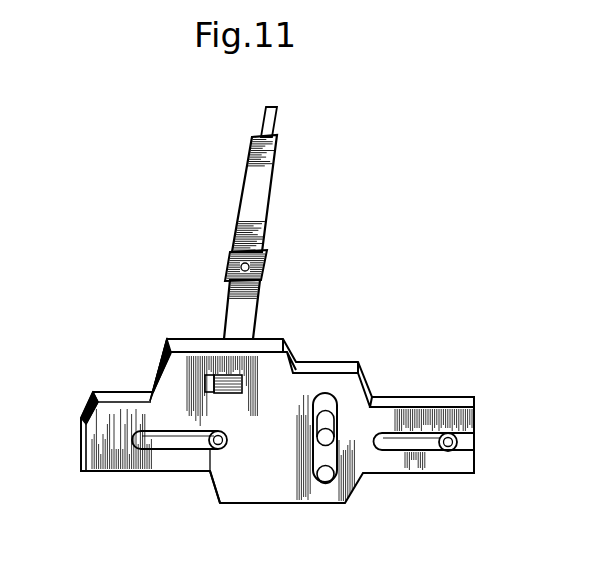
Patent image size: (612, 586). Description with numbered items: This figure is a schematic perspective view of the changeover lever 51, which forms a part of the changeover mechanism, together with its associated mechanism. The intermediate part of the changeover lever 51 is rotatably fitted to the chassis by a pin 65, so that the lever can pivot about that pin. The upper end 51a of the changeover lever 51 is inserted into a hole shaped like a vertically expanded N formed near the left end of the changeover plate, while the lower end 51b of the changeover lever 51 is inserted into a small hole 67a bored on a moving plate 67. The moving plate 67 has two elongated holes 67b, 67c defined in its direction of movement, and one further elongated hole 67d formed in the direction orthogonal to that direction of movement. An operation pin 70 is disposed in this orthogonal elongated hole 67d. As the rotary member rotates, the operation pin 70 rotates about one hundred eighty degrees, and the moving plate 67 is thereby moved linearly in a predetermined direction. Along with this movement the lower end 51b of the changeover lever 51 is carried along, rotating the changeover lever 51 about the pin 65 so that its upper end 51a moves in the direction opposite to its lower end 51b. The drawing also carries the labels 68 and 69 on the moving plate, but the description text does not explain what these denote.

The changeover lever 51 is at (270, 203).
The upper end of the changeover lever 51a is at (276, 117).
The lower end of the changeover lever 51b is at (242, 393).
The pin 65 is at (262, 276).
The moving plate 67 is at (343, 368).
The small hole 67a is at (205, 383).
The elongated hole 67b is at (162, 450).
The elongated hole 67c is at (403, 452).
The elongated hole 67d is at (322, 483).
The notch 68 is at (211, 474).
The hole 69 is at (447, 451).
The operation pin 70 is at (324, 438).